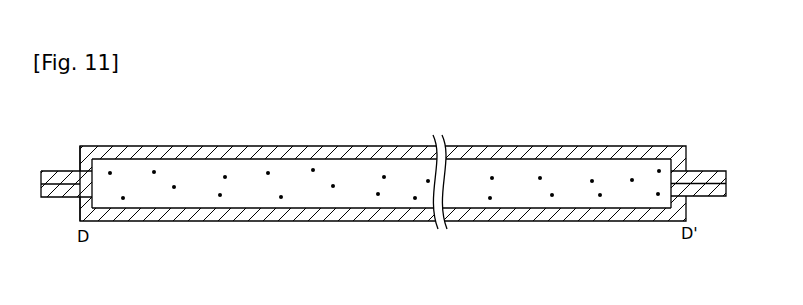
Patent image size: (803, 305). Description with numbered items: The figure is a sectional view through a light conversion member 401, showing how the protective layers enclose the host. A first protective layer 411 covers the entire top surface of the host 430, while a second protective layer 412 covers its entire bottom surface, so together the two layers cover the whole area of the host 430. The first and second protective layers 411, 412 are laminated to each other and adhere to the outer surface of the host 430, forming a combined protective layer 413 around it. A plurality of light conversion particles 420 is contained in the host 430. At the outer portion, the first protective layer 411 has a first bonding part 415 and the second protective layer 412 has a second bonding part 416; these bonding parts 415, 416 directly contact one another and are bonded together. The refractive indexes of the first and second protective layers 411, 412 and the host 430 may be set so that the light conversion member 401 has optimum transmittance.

The light conversion member 401 is at (653, 98).
The first protective layer 411 is at (185, 159).
The second protective layer 412 is at (116, 222).
The housing 413 is at (182, 271).
The first bonding part 415 is at (59, 171).
The second bonding part 416 is at (60, 198).
The light conversion particles 420 is at (220, 197).
The host 430 is at (307, 203).